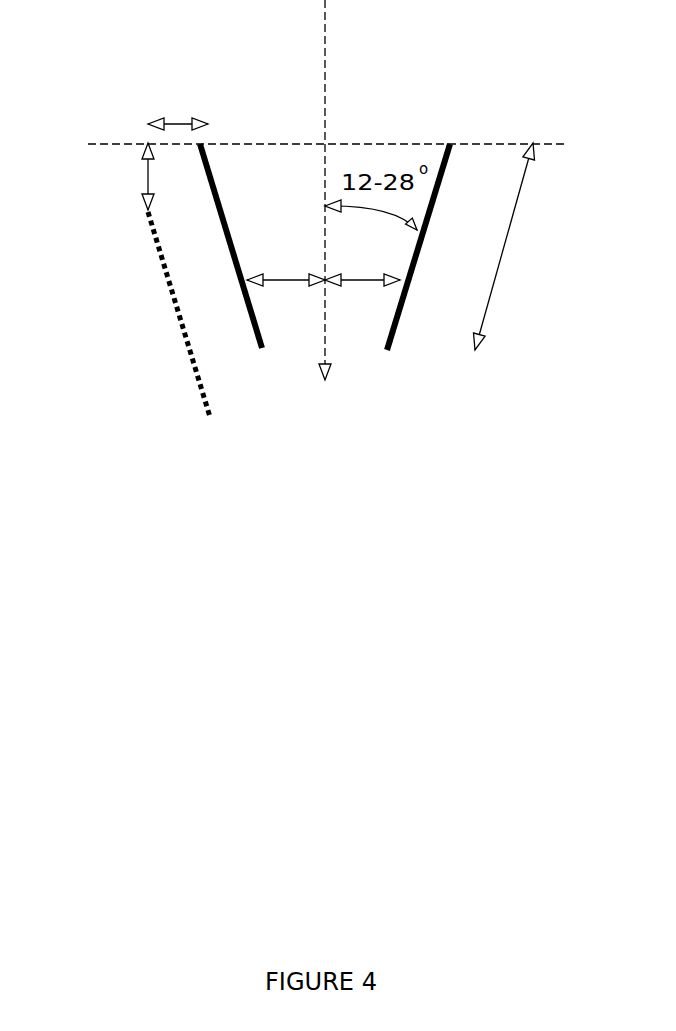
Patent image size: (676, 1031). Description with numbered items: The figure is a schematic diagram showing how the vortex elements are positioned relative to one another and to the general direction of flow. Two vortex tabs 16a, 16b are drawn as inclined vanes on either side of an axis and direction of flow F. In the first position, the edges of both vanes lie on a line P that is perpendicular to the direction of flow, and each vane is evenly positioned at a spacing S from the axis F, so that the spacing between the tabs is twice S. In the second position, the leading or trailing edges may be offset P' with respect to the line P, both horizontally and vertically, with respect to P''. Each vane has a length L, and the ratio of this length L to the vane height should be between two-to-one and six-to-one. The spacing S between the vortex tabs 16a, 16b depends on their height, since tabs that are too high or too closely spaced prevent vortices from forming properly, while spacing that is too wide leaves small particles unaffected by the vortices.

The vortex tab 16a is at (418, 258).
The vortex tab 16b is at (262, 350).
The line perpendicular to direction of flow P is at (353, 147).
The offset position of edges P' is at (127, 314).
The offset reference P'' is at (189, 121).
The axis and direction of flow F is at (336, 190).
The spacing S is at (287, 280).
The length of vane L is at (504, 246).